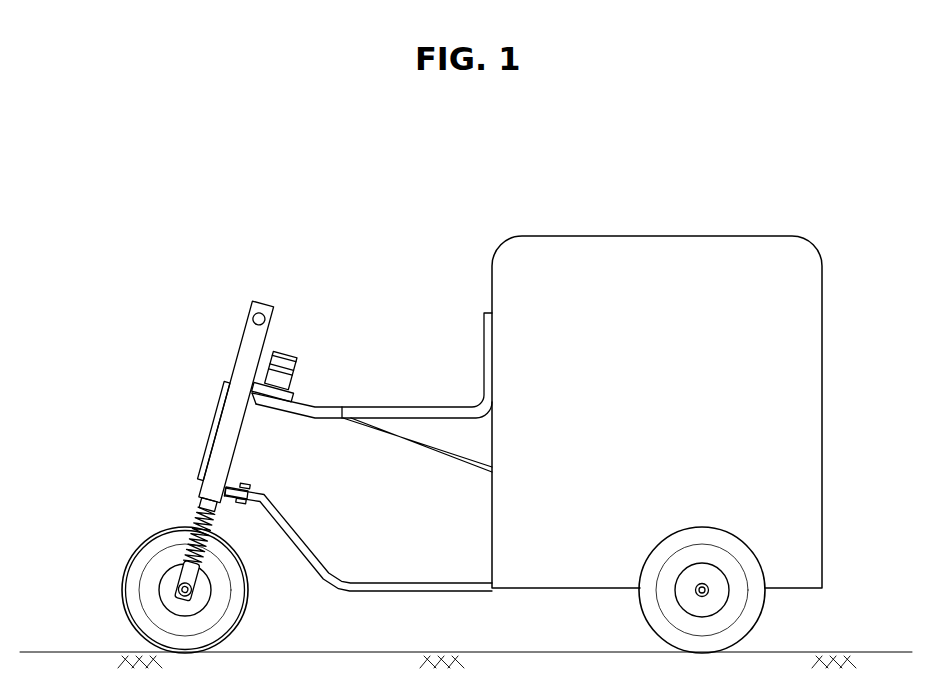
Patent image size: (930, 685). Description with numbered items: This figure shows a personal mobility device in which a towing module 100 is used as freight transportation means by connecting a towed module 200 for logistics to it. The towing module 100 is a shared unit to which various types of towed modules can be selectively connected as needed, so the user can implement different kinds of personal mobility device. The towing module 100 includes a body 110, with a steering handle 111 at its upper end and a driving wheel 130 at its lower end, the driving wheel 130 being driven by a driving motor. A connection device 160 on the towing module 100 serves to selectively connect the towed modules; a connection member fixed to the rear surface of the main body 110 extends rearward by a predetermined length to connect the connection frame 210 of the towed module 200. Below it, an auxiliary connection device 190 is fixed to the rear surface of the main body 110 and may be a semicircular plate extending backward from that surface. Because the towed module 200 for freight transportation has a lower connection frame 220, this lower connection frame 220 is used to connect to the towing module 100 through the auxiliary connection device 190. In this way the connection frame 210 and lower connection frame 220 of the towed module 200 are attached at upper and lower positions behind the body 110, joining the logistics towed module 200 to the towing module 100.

The towing module 100 is at (227, 426).
The body 110 is at (240, 372).
The steering handle 111 is at (260, 312).
The driving wheel 130 is at (147, 588).
The connection device 160 is at (310, 342).
The auxiliary connection device 190 is at (266, 481).
The towed module 200 is at (704, 228).
The connection frame 210 is at (312, 408).
The lower connection frame 220 is at (302, 544).